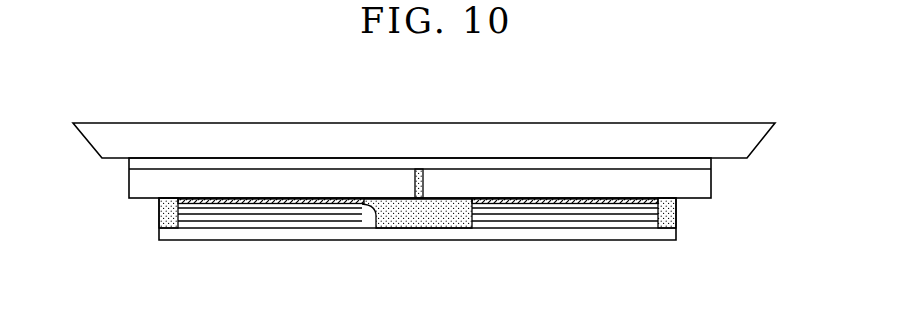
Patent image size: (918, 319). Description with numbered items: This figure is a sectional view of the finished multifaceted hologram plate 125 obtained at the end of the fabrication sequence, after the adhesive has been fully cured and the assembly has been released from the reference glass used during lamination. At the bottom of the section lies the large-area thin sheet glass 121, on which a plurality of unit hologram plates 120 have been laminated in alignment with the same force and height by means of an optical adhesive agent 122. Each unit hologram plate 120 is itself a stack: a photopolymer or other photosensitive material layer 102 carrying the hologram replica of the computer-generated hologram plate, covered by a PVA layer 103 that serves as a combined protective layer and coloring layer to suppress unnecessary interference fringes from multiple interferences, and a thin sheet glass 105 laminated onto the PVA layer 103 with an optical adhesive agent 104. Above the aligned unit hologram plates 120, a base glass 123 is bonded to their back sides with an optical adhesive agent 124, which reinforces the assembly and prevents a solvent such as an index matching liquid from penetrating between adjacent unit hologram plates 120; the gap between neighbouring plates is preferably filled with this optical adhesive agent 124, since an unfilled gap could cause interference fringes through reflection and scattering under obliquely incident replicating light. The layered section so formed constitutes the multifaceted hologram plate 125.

The photosensitive material layer 102 is at (159, 202).
The PVA layer 103 is at (377, 229).
The optical adhesive agent 104 is at (257, 213).
The thin sheet glass 105 is at (320, 222).
The unit hologram plate 120 is at (263, 150).
The thin sheet glass 121 is at (676, 233).
The optical adhesive agent 122 is at (159, 226).
The base glass 123 is at (762, 143).
The optical adhesive agent 124 is at (711, 161).
The multifaceted hologram plate 125 is at (447, 281).